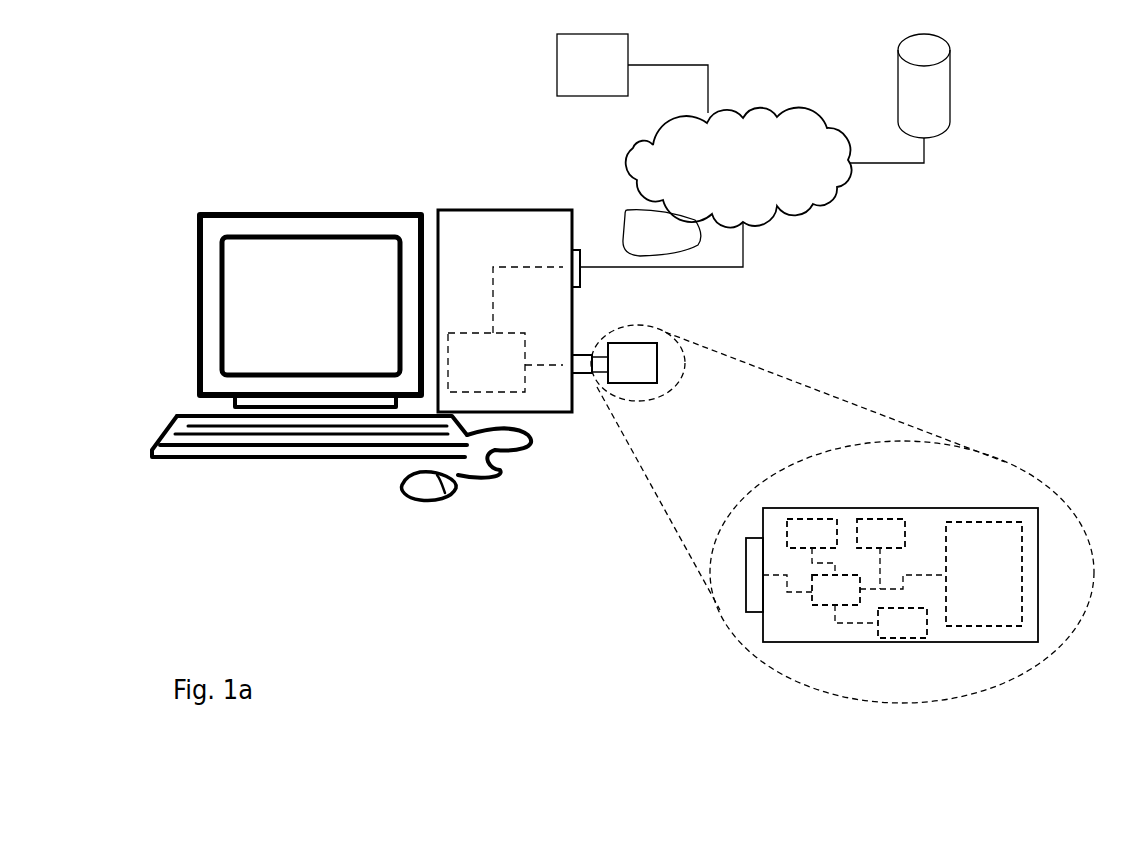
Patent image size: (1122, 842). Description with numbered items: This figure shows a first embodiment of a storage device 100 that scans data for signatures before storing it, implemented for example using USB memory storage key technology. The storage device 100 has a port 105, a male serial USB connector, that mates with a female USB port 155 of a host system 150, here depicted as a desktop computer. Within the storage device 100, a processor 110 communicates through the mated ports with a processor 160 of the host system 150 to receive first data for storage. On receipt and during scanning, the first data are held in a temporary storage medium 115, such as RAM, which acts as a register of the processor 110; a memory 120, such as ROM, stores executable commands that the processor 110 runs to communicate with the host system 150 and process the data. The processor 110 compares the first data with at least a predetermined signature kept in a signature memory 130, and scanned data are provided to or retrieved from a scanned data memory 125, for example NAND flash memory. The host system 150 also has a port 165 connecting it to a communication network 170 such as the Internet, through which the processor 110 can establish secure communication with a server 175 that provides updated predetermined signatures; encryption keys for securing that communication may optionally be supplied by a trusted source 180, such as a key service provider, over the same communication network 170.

The storage device 100 is at (1002, 447).
The port 105 is at (750, 582).
The processor 110 is at (818, 612).
The temporary storage medium 115 is at (798, 517).
The memory 120 is at (866, 518).
The scanned data memory 125 is at (967, 517).
The signature memory 130 is at (888, 630).
The host system 150 is at (455, 222).
The port 155 is at (582, 378).
The processor 160 is at (528, 396).
The port 165 is at (588, 240).
The communication network 170 is at (813, 207).
The server 175 is at (897, 60).
The trusted source 180 is at (553, 68).